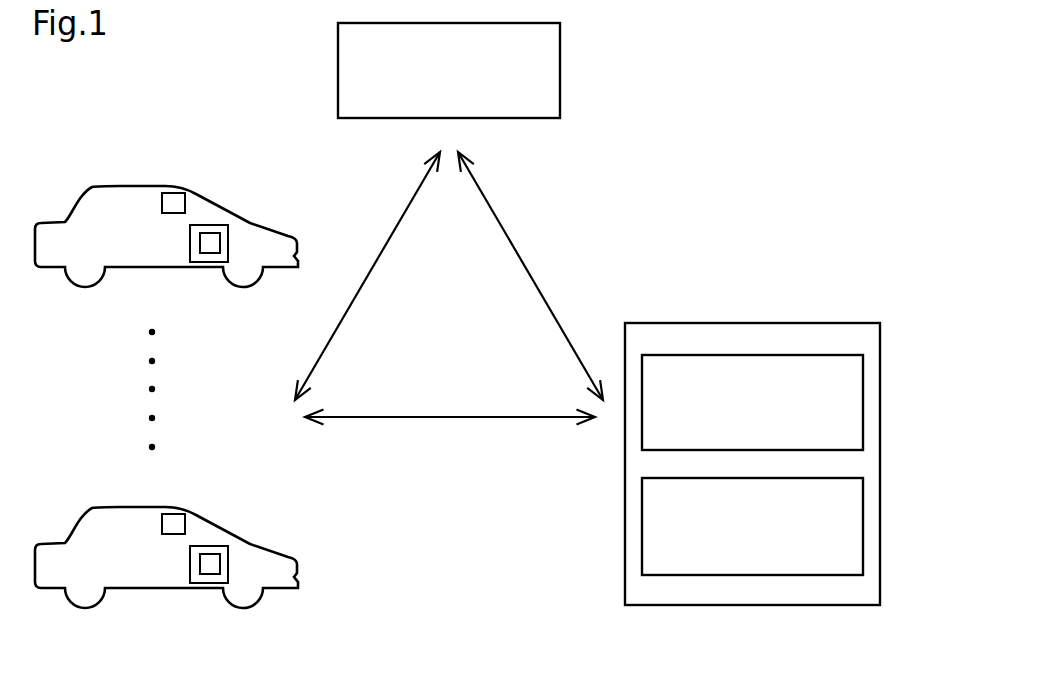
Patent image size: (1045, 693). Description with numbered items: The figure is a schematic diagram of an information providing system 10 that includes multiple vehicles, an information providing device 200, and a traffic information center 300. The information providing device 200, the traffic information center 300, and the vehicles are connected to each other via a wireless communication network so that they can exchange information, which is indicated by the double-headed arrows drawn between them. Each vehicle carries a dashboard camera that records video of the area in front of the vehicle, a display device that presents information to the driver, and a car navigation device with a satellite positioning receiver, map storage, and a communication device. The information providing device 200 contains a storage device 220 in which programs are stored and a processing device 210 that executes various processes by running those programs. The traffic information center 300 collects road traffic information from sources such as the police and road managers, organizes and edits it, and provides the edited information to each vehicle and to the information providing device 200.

The information providing system 10 is at (673, 65).
The information providing device 200 is at (795, 323).
The processing device 210 is at (865, 400).
The storage device 220 is at (865, 525).
The traffic information center 300 is at (562, 72).